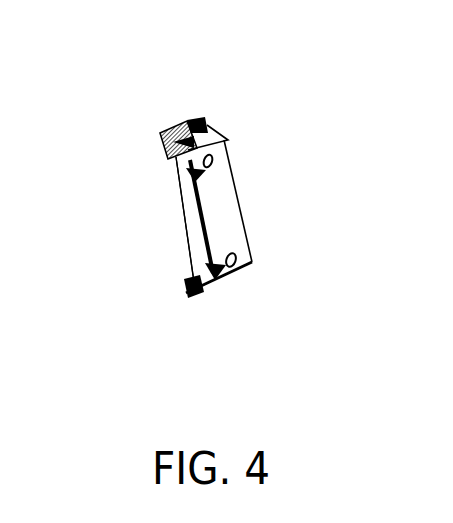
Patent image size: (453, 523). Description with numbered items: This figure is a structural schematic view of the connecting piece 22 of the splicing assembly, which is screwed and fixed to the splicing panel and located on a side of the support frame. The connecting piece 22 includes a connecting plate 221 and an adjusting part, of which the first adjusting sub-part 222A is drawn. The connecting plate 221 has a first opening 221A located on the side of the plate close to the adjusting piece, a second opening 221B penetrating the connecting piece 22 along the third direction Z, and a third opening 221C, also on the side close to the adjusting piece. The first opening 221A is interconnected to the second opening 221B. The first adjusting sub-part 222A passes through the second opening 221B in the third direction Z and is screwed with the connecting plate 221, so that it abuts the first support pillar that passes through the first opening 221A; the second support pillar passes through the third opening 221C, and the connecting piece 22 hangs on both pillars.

The connecting piece 22 is at (76, 30).
The connecting plate 221 is at (240, 197).
The first opening 221A is at (180, 185).
The second opening 221B is at (176, 122).
The third opening 221C is at (190, 293).
The first adjusting sub-part 222A is at (207, 124).